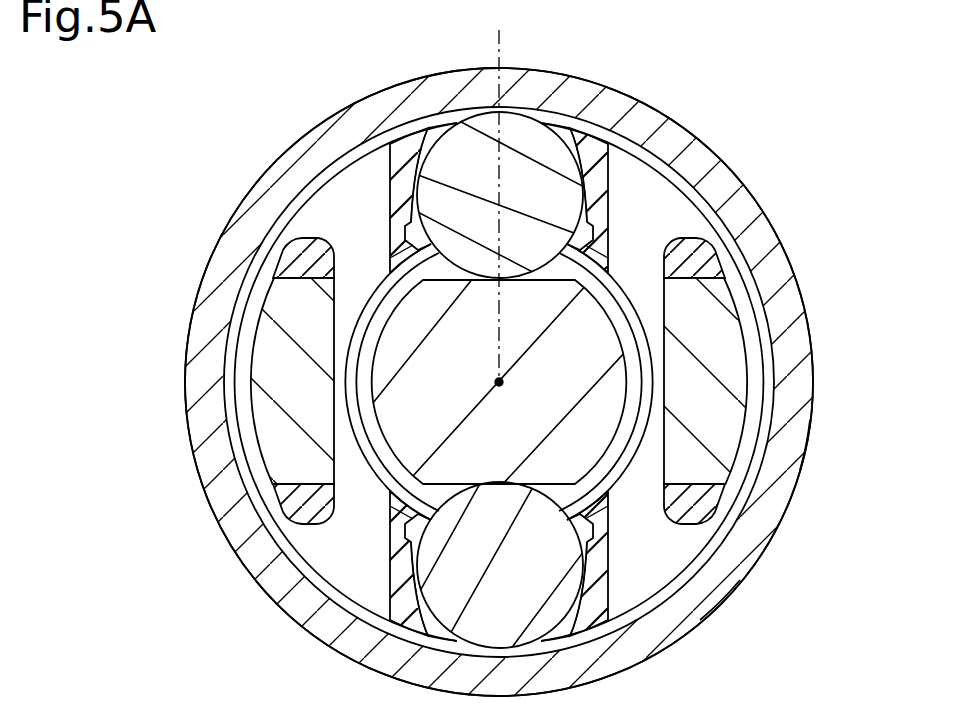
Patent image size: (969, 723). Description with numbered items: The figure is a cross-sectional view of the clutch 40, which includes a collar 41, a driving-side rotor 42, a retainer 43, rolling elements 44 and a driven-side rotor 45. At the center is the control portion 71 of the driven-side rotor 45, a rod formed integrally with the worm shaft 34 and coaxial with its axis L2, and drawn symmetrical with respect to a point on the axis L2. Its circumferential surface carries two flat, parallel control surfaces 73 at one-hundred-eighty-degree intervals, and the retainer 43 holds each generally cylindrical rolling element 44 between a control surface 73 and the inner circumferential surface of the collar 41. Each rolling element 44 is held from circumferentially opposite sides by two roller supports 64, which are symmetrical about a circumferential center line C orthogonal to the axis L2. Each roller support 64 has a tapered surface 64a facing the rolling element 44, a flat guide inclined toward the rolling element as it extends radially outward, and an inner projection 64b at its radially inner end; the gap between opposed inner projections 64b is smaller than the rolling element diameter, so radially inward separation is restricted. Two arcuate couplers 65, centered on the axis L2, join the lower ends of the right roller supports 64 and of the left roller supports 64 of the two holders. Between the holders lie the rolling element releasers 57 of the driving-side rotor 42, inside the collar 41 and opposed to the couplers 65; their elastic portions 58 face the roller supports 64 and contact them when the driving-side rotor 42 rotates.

The clutch 40 is at (784, 123).
The collar 41 is at (806, 262).
The driving-side rotor 42 is at (790, 448).
The retainer 43 is at (697, 575).
The rolling element 44 is at (478, 126).
The driven-side rotor 45 is at (370, 470).
The rolling element releaser 57 is at (262, 355).
The elastic portion 58 is at (305, 255).
The roller support 64 is at (396, 193).
The tapered surface 64a is at (430, 124).
The inner projection 64b is at (412, 268).
The coupler 65 is at (700, 572).
The control portion 71 is at (398, 413).
The control surface 73 is at (458, 280).
The worm shaft 34 is at (626, 318).
The axis of worm shaft L2 is at (502, 386).
The circumferential center line C is at (499, 42).